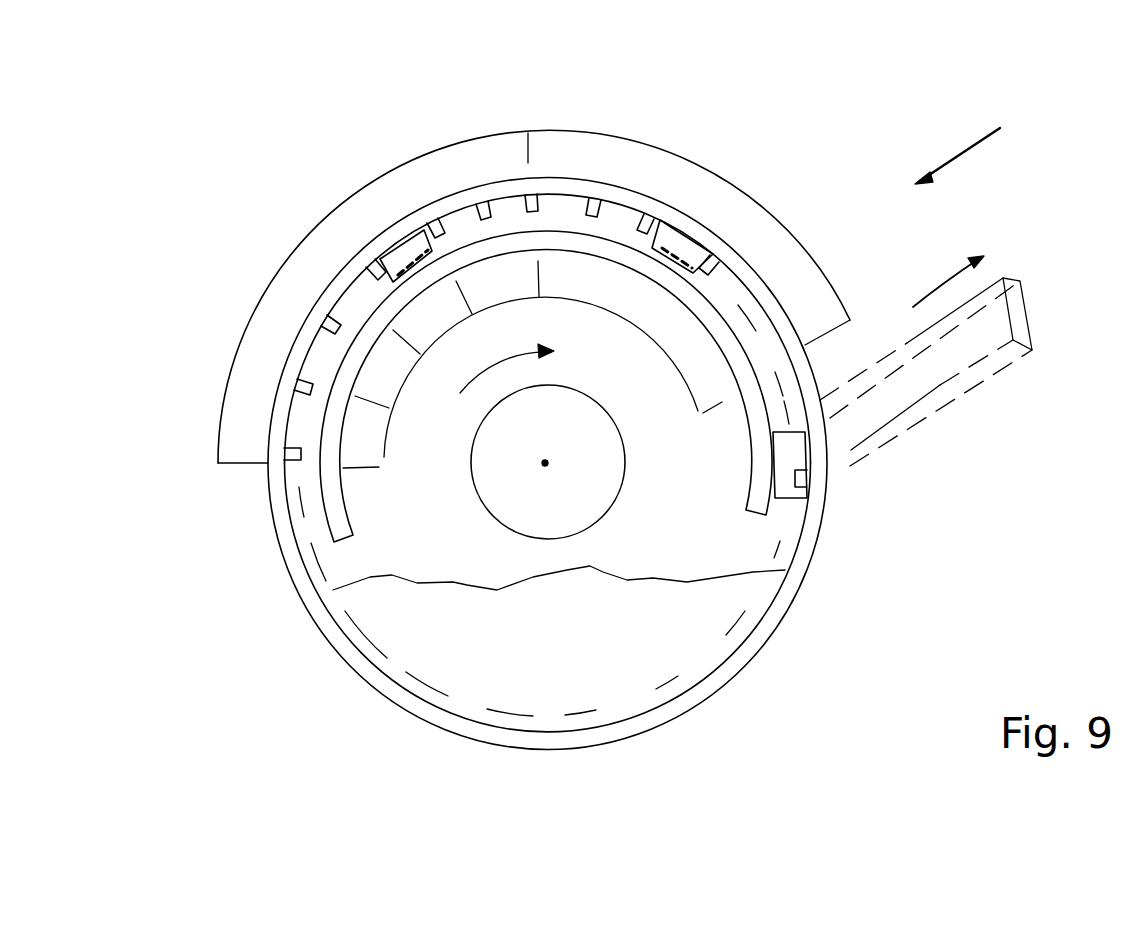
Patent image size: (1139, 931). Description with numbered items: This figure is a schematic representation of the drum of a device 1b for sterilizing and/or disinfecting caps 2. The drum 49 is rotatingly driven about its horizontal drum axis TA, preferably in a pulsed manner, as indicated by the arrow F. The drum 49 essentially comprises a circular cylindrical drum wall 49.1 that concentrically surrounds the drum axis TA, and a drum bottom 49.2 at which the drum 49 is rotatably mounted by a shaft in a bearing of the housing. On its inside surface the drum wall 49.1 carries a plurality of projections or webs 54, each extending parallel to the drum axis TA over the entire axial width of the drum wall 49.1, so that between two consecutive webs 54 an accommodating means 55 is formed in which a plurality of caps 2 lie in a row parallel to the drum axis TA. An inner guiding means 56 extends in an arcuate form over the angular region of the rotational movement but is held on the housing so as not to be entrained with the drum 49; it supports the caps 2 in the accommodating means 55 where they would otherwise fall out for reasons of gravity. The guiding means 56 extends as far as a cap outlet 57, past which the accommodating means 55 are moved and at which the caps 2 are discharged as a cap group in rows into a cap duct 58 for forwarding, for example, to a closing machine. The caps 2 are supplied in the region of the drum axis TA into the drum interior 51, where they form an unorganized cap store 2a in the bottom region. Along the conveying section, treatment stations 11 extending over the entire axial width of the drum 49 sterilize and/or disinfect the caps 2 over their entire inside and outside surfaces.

The device for sterilizing and/or disinfecting caps 1b is at (988, 147).
The caps 2 is at (397, 250).
The cap store 2a is at (655, 636).
The treatment heads or treatment stations 11 is at (342, 213).
The drum 49 is at (522, 752).
The drum wall 49.1 is at (772, 623).
The drum bottom 49.2 is at (410, 513).
The drum interior 51 is at (697, 506).
The projections or webs 54 is at (342, 313).
The accommodating means 55 is at (558, 207).
The inner guiding means 56 is at (345, 506).
The cap outlet 57 is at (795, 472).
The cap duct 58 is at (930, 372).
The drum axis TA is at (550, 459).
The arrow indicating drum rotation F is at (518, 318).